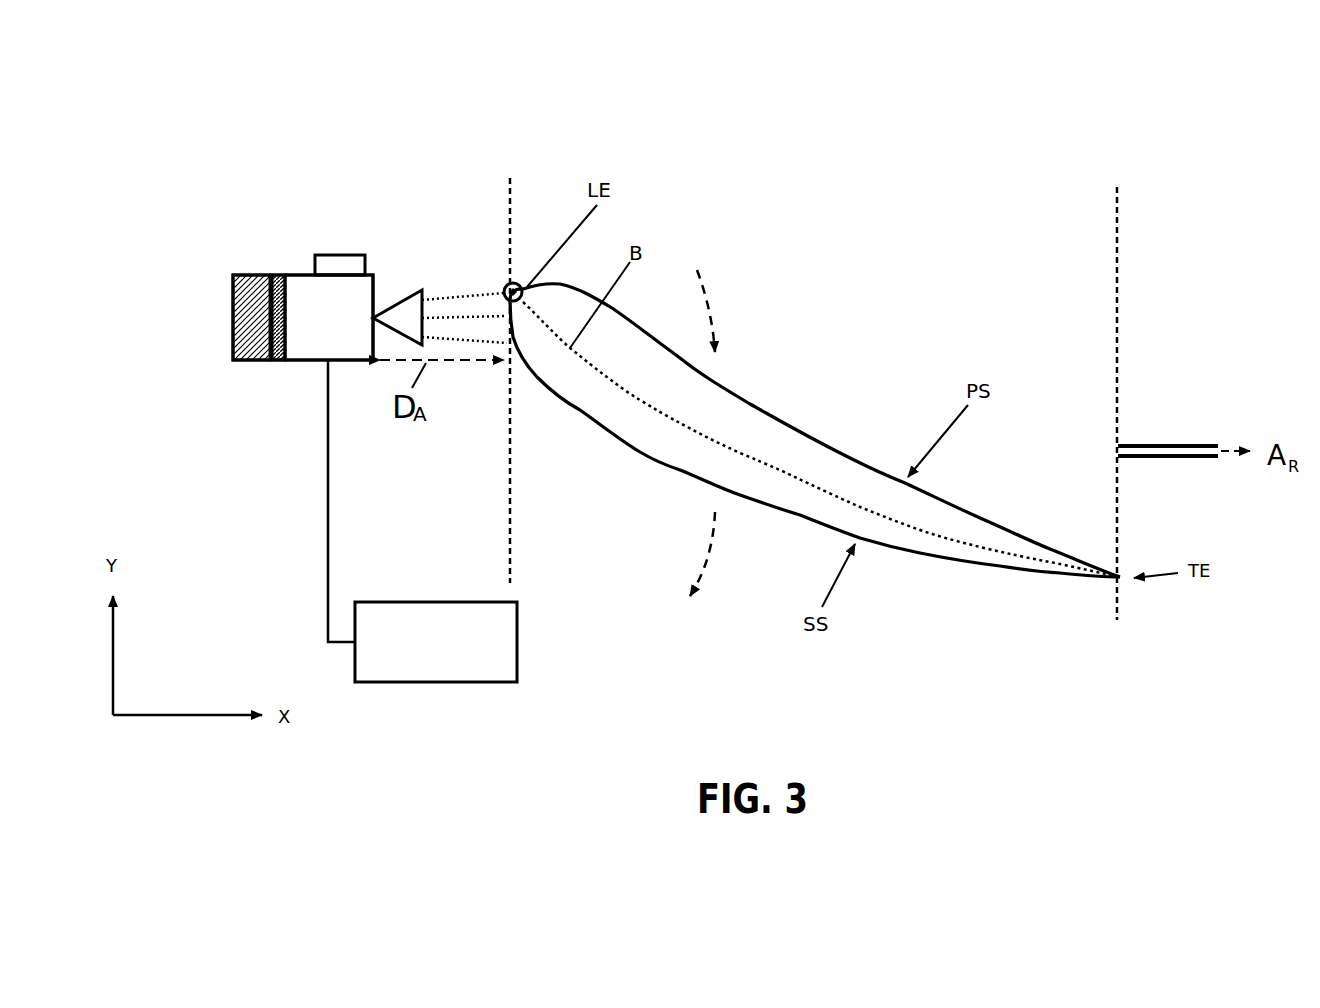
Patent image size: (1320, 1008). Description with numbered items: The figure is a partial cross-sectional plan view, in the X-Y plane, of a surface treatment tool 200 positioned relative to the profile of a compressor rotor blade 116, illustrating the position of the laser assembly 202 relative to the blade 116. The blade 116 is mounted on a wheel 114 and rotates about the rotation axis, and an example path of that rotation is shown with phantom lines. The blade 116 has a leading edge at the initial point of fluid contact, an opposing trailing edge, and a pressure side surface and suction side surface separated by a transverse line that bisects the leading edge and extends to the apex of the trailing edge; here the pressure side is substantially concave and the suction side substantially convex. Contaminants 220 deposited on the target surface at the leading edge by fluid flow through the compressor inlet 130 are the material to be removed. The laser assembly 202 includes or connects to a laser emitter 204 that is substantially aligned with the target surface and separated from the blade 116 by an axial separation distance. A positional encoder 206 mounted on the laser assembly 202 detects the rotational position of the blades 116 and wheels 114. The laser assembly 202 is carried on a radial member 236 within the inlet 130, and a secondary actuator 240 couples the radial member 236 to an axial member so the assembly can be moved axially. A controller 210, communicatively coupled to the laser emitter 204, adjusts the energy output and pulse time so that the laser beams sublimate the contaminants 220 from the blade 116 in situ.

The surface treatment tool 200 is at (395, 234).
The laser assembly 202 is at (348, 332).
The laser emitter 204 is at (417, 290).
The positional encoder 206 is at (232, 380).
The controller 210 is at (453, 655).
The contaminants 220 is at (517, 278).
The radial member 236 is at (347, 255).
The secondary actuator 240 is at (233, 310).
The wheel 114 is at (900, 396).
The compressor rotor blade 116 is at (665, 441).
The compressor inlet 130 is at (428, 561).